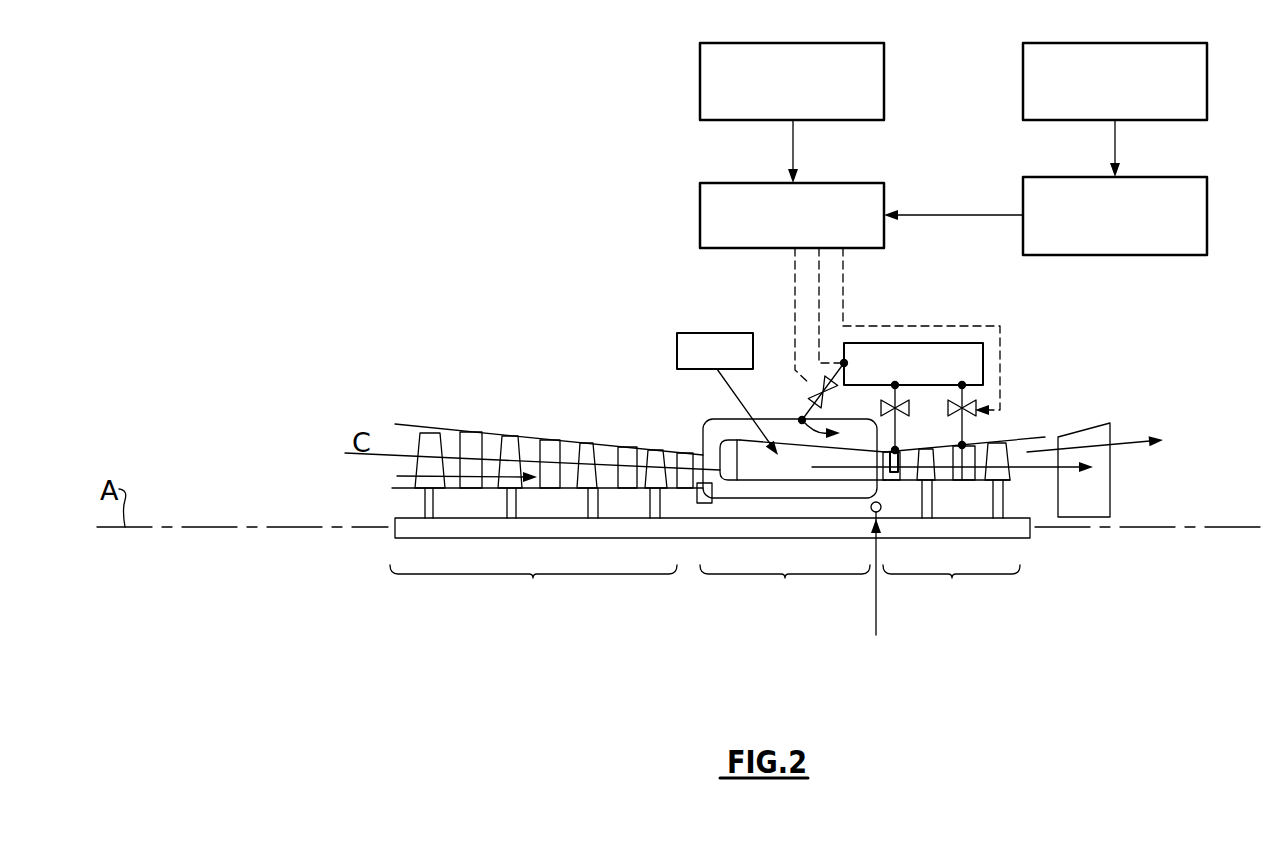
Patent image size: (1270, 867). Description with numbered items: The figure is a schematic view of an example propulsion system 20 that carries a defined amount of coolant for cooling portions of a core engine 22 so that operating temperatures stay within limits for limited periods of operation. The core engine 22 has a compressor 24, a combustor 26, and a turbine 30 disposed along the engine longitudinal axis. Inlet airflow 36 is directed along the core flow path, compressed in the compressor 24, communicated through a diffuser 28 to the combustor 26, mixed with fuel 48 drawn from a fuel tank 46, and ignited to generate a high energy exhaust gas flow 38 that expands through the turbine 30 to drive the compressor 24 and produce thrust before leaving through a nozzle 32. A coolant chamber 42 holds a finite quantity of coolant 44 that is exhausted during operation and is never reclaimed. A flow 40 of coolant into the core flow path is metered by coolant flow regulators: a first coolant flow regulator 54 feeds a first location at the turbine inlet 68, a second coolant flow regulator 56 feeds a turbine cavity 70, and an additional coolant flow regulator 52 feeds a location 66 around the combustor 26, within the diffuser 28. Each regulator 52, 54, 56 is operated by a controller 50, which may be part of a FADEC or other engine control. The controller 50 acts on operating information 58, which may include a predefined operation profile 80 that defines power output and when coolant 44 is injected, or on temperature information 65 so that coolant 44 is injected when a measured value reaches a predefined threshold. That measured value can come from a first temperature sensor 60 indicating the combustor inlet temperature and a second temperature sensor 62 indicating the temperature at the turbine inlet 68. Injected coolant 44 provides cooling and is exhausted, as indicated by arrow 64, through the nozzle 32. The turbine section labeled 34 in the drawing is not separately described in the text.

The propulsion system 20 is at (398, 235).
The core engine 22 is at (506, 390).
The compressor 24 is at (533, 578).
The combustor 26 is at (785, 578).
The diffuser 28 is at (788, 504).
The turbine 30 is at (952, 578).
The nozzle 32 is at (1112, 497).
The turbine rotor 34 is at (951, 504).
The inlet airflow 36 is at (422, 489).
The exhaust gas flow 38 is at (1044, 468).
The flow of coolant 40 is at (836, 399).
The coolant chamber 42 is at (985, 360).
The coolant 44 is at (955, 363).
The fuel tank 46 is at (677, 347).
The fuel 48 is at (731, 393).
The controller 50 is at (700, 212).
The coolant flow regulator 52 is at (808, 397).
The first coolant flow regulator 54 is at (912, 404).
The second coolant flow regulator 56 is at (976, 414).
The operating information 58 is at (1207, 222).
The first temperature sensor 60 is at (702, 503).
The second temperature sensor 62 is at (878, 586).
The arrow 64 is at (1130, 440).
The temperature information 65 is at (885, 89).
The location 66 is at (802, 420).
The turbine inlet 68 is at (896, 497).
The turbine cavity 70 is at (963, 500).
The operation profile 80 is at (1207, 89).